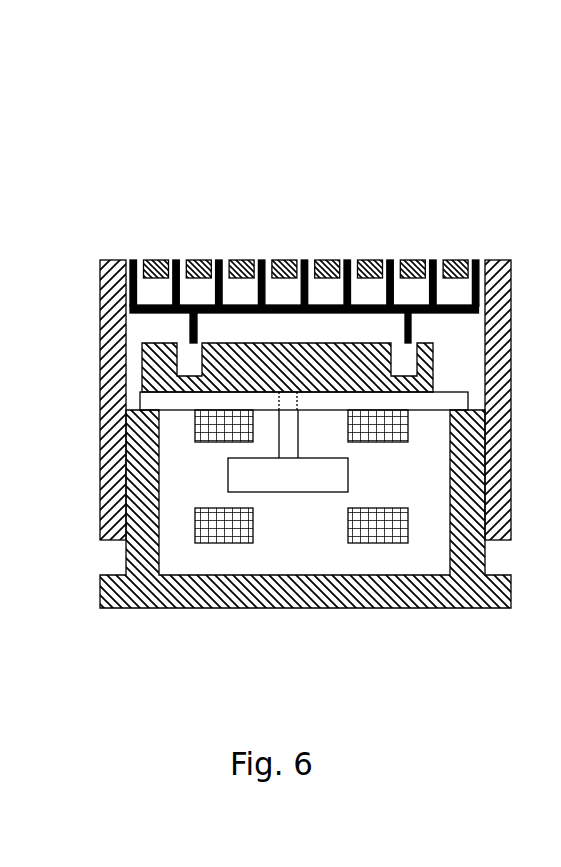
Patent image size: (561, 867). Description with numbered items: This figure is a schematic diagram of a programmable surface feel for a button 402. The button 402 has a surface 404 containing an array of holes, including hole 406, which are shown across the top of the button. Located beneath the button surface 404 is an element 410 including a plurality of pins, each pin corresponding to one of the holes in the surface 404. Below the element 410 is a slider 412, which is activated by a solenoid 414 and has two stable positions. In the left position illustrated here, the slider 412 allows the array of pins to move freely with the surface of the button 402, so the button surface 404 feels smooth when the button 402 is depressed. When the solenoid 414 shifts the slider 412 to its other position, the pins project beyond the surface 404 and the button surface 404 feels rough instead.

The button 402 is at (374, 122).
The surface 404 is at (158, 260).
The hole 406 is at (253, 238).
The element 410 is at (177, 315).
The slider 412 is at (143, 369).
The solenoid 414 is at (297, 552).